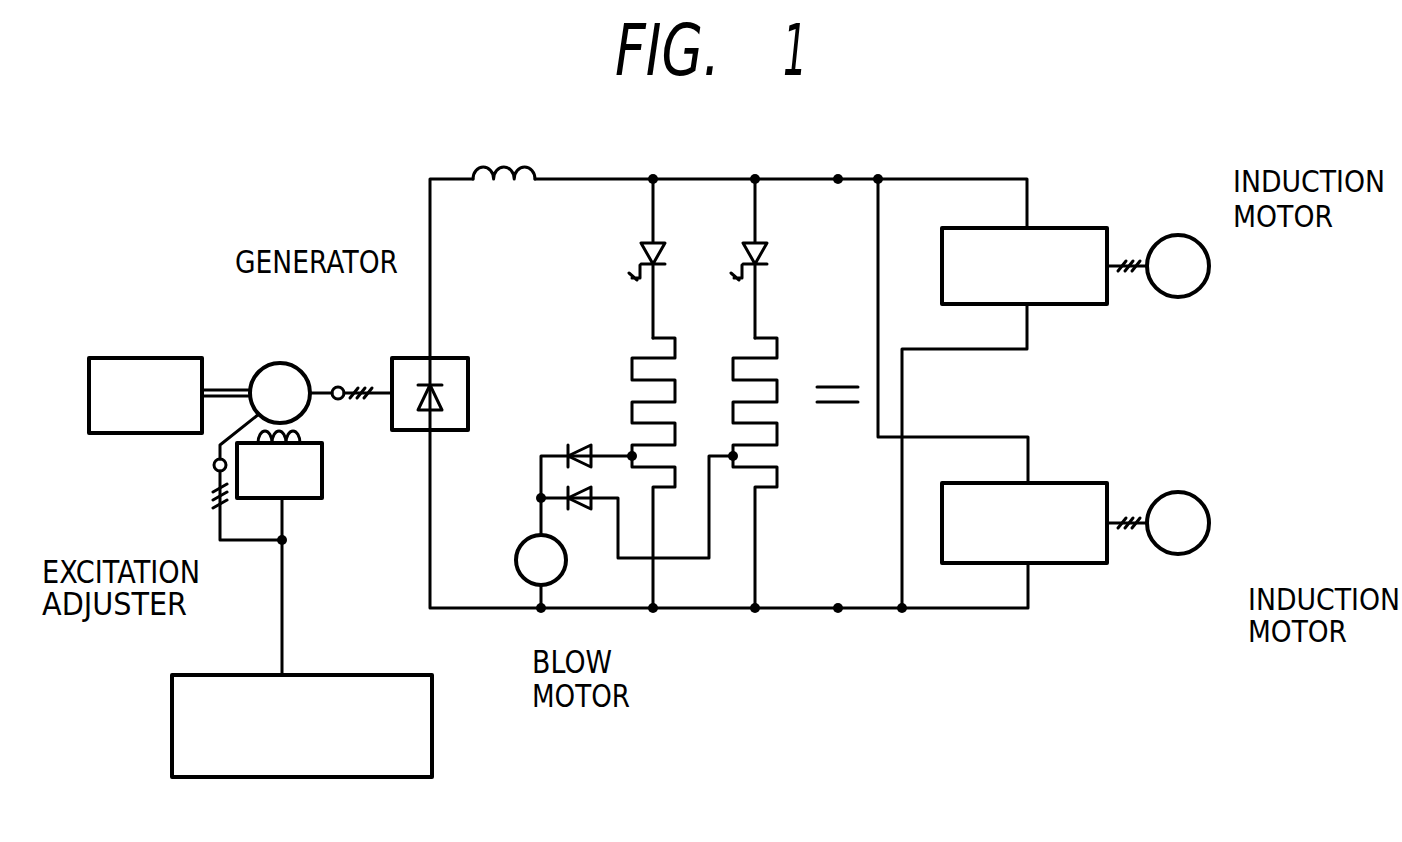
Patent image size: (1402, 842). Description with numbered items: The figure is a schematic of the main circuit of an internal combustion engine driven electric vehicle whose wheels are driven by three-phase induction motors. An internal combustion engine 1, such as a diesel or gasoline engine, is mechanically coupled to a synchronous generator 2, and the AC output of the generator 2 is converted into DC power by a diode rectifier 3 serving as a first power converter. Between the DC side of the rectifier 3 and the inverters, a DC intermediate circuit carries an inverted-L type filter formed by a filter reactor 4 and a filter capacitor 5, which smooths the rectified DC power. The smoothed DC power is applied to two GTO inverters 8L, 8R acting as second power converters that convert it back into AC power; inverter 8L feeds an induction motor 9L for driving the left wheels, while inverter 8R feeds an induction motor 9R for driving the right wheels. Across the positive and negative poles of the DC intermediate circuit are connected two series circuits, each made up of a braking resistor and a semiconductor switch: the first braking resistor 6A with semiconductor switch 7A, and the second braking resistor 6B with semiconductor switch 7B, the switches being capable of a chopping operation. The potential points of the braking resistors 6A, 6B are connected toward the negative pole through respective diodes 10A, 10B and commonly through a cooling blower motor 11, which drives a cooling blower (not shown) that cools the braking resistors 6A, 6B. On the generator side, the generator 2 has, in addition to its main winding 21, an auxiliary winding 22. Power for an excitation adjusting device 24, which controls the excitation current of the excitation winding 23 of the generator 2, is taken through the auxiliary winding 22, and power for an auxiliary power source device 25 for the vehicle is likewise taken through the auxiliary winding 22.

The internal combustion engine 1 is at (172, 358).
The synchronous generator 2 is at (272, 364).
The diode rectifier 3 is at (405, 357).
The filter reactor 4 is at (507, 166).
The filter capacitor 5 is at (808, 380).
The first braking resistor 6A is at (663, 430).
The second braking resistor 6B is at (765, 430).
The semiconductor switch 7A is at (641, 252).
The semiconductor switch 7B is at (743, 252).
The GTO inverter 8L is at (1088, 227).
The GTO inverter 8R is at (1090, 565).
The induction motor 9L is at (1178, 247).
The induction motor 9R is at (1187, 537).
The diode 10A is at (569, 446).
The diode 10B is at (583, 512).
The cooling blower motor 11 is at (528, 565).
The main winding 21 is at (336, 387).
The auxiliary winding 22 is at (230, 426).
The excitation winding 23 is at (300, 430).
The excitation adjusting device 24 is at (265, 482).
The auxiliary power source device 25 is at (377, 673).